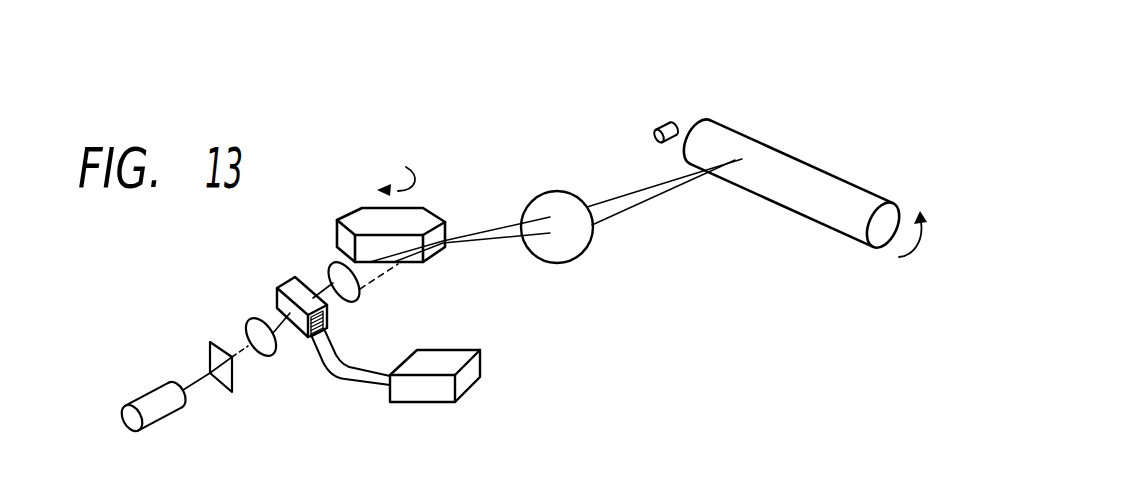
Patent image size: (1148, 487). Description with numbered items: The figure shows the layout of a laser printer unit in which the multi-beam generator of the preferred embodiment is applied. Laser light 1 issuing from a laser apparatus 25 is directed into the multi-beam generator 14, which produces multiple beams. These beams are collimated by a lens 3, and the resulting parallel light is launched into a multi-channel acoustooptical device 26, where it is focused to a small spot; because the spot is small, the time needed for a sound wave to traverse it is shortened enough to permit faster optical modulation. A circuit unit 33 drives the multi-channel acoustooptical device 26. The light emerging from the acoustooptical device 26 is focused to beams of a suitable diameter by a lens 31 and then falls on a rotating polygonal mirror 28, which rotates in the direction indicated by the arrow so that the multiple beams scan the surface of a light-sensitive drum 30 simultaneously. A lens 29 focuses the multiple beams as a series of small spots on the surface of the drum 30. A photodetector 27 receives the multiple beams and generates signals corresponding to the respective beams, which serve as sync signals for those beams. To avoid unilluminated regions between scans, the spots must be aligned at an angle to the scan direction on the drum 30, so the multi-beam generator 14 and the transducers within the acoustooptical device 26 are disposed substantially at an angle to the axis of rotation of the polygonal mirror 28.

The laser light 1 is at (190, 391).
The lens 3 is at (253, 320).
The multi-beam generator 14 is at (208, 348).
The laser apparatus 25 is at (148, 392).
The multi-channel acoustooptical device 26 is at (287, 278).
The photodetector 27 is at (654, 130).
The rotating polygonal mirror 28 is at (362, 207).
The lens 29 is at (545, 192).
The light-sensitive drum 30 is at (758, 137).
The lens 31 is at (330, 263).
The circuit unit 33 is at (465, 348).